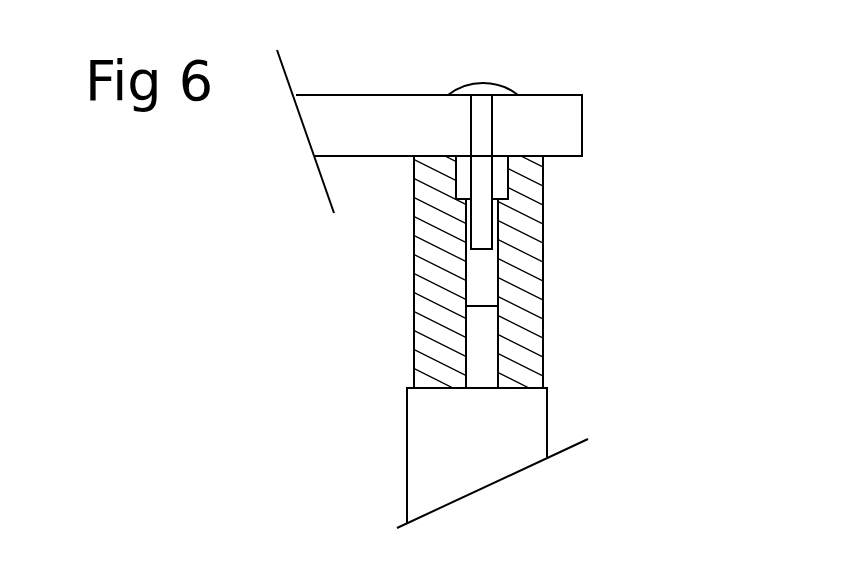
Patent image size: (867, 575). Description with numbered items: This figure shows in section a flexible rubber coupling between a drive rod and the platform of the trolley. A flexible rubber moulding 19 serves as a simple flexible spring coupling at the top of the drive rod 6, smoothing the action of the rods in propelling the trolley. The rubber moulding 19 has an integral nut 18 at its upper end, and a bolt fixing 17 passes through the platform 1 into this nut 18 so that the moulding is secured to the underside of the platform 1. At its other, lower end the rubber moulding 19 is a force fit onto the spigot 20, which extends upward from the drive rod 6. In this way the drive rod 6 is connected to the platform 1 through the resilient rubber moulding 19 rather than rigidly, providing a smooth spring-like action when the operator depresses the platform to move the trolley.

The platform 1 is at (535, 103).
The bolt fixing 17 is at (478, 143).
The integral nut 18 is at (500, 182).
The rubber moulding 19 is at (520, 269).
The spigot 20 is at (478, 352).
The drive rod 6 is at (502, 427).